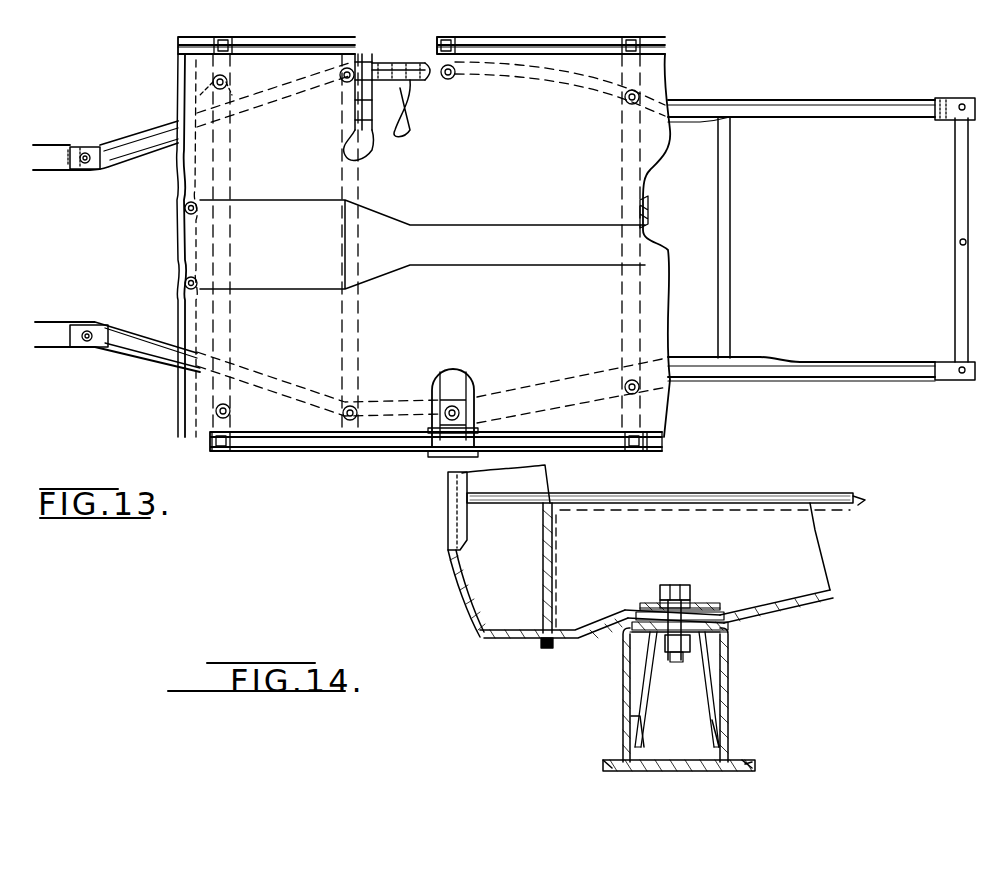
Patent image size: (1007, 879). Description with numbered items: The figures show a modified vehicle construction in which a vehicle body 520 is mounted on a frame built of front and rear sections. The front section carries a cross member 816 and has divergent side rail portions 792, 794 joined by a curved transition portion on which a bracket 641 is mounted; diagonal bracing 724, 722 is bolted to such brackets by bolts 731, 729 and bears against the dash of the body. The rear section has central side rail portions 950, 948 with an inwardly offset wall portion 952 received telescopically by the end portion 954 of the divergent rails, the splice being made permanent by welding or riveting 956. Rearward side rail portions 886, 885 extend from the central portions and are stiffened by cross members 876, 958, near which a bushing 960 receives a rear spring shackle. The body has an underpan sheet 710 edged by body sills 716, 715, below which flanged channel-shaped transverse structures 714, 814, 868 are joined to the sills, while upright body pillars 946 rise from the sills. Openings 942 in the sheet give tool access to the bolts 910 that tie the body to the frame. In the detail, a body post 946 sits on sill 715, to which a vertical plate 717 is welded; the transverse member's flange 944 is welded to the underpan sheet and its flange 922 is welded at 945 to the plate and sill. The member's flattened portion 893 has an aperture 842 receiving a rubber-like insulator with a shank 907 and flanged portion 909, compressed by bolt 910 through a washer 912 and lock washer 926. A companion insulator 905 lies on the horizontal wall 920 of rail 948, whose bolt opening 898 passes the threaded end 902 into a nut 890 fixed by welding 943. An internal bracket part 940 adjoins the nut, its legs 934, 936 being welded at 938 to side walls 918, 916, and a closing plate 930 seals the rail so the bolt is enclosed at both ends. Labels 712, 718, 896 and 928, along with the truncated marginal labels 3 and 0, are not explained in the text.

In FIG. 13, the vehicle body 520 is at (688, 40).
In FIG. 13, the underpan sheet 710 is at (668, 84).
In FIG. 14, the underpan sheet 710 is at (772, 493).
In FIG. 13, the frame member 712 is at (212, 425).
In FIG. 13, the transverse structure 714 is at (350, 126).
In FIG. 14, the body sill 715 is at (455, 588).
In FIG. 13, the body sill 716 is at (300, 40).
In FIG. 14, the vertical plate 717 is at (542, 594).
In FIG. 13, the bottom plate 718 is at (440, 455).
In FIG. 13, the diagonal bracing 722 is at (105, 322).
In FIG. 13, the diagonal bracing 724 is at (100, 133).
In FIG. 13, the bolt 729 is at (87, 343).
In FIG. 13, the bolt 731 is at (85, 148).
In FIG. 13, the divergent side rail portion 792 is at (135, 158).
In FIG. 13, the divergent side rail portion 794 is at (165, 366).
In FIG. 13, the transverse structure 814 is at (433, 376).
In FIG. 13, the cross member 816 is at (176, 236).
In FIG. 14, the aperture 842 is at (715, 606).
In FIG. 13, the transverse structure 868 is at (650, 190).
In FIG. 13, the cross member 876 is at (731, 254).
In FIG. 13, the rearward side rail portion 885 is at (862, 362).
In FIG. 13, the rearward side rail portion 886 is at (865, 118).
In FIG. 14, the nut 890 is at (648, 700).
In FIG. 14, the flattened portion 893 is at (636, 624).
In FIG. 14, the bolt end 896 is at (672, 664).
In FIG. 14, the bolt opening 898 is at (740, 605).
In FIG. 14, the threaded end 902 is at (735, 674).
In FIG. 14, the companion insulator 905 is at (712, 610).
In FIG. 14, the shank 907 is at (625, 626).
In FIG. 14, the flanged portion 909 is at (642, 612).
In FIG. 13, the bolt 910 is at (445, 405).
In FIG. 14, the bolt 910 is at (678, 585).
In FIG. 14, the washer 912 is at (648, 600).
In FIG. 14, the side wall 916 is at (624, 672).
In FIG. 14, the side wall 918 is at (732, 665).
In FIG. 14, the horizontal wall 920 is at (632, 655).
In FIG. 14, the flange 922 is at (556, 632).
In FIG. 14, the lock washer 926 is at (660, 585).
In FIG. 14, the washer 928 is at (683, 600).
In FIG. 14, the closing plate 930 is at (640, 772).
In FIG. 14, the leg 934 is at (712, 740).
In FIG. 14, the leg 936 is at (640, 718).
In FIG. 14, the welding 938 is at (724, 730).
In FIG. 14, the bracket part 940 is at (730, 628).
In FIG. 13, the opening 942 is at (448, 80).
In FIG. 14, the opening 942 is at (655, 496).
In FIG. 14, the welding 943 is at (690, 645).
In FIG. 14, the flange 944 is at (850, 505).
In FIG. 14, the welding 945 is at (552, 648).
In FIG. 13, the body pillar 946 is at (450, 36).
In FIG. 14, the body pillar 946 is at (447, 490).
In FIG. 13, the central side rail portion 948 is at (472, 385).
In FIG. 14, the central side rail portion 948 is at (603, 767).
In FIG. 13, the central side rail portion 950 is at (405, 115).
In FIG. 13, the inwardly offset wall portion 952 is at (390, 90).
In FIG. 14, the inwardly offset wall portion 952 is at (756, 762).
In FIG. 13, the end portion 954 is at (365, 43).
In FIG. 13, the welding or riveting 956 is at (368, 60).
In FIG. 13, the cross member 958 is at (955, 237).
In FIG. 13, the bushing 960 is at (940, 98).
In FIG. 13, the bracket 641 is at (80, 326).
In FIG. 13, the partial numeral 3 is at (42, 128).
In FIG. 13, the partial numeral 0 is at (46, 312).